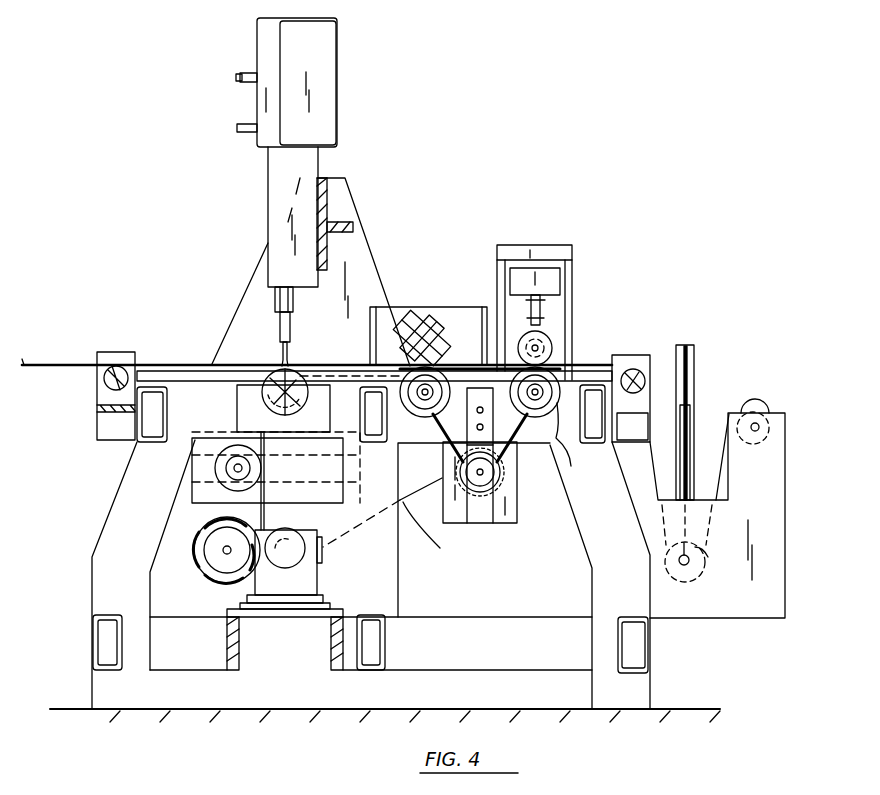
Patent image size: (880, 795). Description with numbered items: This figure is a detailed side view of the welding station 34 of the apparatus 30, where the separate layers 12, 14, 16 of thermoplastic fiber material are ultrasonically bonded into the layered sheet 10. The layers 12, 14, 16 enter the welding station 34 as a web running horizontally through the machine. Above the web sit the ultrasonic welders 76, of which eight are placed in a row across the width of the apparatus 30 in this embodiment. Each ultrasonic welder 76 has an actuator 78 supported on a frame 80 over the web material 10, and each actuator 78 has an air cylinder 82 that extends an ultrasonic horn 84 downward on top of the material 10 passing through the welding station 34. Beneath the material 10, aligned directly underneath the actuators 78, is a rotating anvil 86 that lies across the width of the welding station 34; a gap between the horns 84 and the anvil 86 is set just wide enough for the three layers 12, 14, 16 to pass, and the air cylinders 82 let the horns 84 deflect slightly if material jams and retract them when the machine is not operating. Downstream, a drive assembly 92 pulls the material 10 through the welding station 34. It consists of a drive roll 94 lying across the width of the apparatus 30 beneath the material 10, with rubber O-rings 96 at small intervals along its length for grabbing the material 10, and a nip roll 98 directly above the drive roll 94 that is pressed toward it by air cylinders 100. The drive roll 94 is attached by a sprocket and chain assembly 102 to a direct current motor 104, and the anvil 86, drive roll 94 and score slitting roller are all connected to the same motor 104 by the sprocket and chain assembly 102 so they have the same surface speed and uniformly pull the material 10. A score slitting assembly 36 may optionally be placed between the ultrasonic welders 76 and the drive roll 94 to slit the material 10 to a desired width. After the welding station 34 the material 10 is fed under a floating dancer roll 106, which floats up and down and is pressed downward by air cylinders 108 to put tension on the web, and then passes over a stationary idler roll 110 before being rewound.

The layered sheet 10 is at (600, 360).
The layer 12 is at (316, 335).
The layer 14 is at (316, 335).
The layer 16 is at (106, 318).
The apparatus 30 is at (636, 474).
The welding station 34 is at (78, 585).
The score slitting assembly 36 is at (413, 307).
The ultrasonic welder 76 is at (328, 43).
The actuator 78 is at (267, 200).
The frame 80 is at (358, 197).
The air cylinder 82 is at (276, 296).
The ultrasonic horn 84 is at (282, 352).
The rotating anvil 86 is at (250, 413).
The drive assembly 92 is at (548, 245).
The drive roll 94 is at (498, 431).
The rubber O-ring 96 is at (567, 367).
The nip roll 98 is at (550, 333).
The air cylinder 100 is at (540, 300).
The sprocket and chain assembly 102 is at (399, 521).
The direct current motor 104 is at (250, 582).
The floating dancer roll 106 is at (708, 557).
The air cylinder 108 is at (694, 362).
The stationary idler roll 110 is at (755, 411).